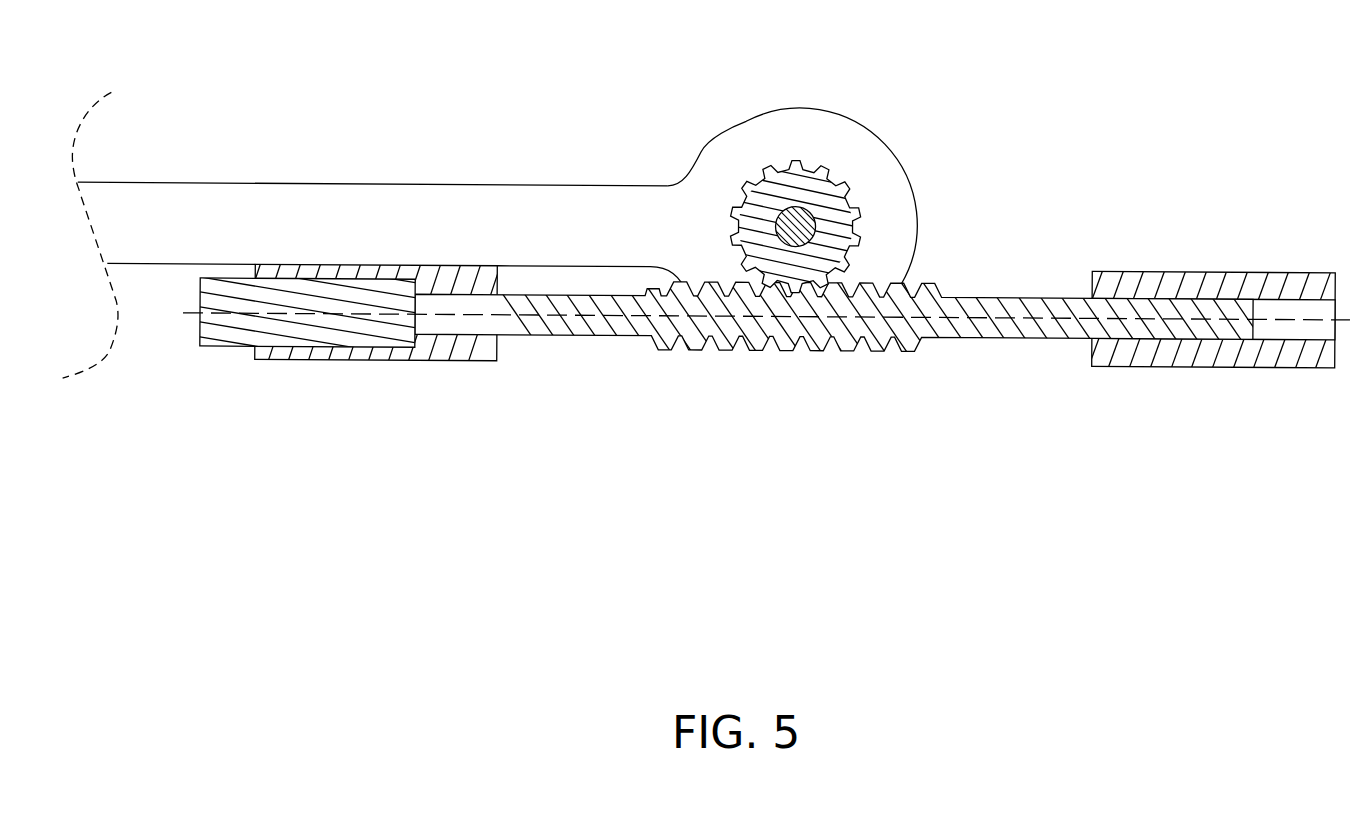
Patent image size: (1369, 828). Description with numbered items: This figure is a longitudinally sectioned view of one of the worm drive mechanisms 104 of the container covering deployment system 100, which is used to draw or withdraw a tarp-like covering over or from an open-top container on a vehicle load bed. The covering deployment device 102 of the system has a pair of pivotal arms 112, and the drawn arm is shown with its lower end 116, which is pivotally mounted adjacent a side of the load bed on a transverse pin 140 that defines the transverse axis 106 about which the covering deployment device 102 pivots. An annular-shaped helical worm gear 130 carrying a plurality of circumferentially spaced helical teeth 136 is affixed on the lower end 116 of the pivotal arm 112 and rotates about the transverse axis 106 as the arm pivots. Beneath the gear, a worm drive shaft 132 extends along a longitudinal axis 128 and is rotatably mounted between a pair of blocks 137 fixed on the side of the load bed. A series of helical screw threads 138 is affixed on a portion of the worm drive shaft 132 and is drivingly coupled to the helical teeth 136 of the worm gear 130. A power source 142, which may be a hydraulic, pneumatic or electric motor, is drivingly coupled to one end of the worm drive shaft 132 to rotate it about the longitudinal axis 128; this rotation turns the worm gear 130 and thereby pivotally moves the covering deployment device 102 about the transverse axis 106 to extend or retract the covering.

The container covering deployment system 100 is at (696, 32).
The covering deployment device 102 is at (220, 170).
The worm drive mechanism 104 is at (1000, 106).
The transverse axis 106 is at (787, 227).
The pivotal arm 112 is at (446, 182).
The lower end 116 is at (790, 107).
The longitudinal axis 128 is at (1060, 336).
The annular-shaped helical worm gear 130 is at (728, 232).
The worm drive shaft 132 is at (1020, 296).
The helical teeth 136 is at (803, 162).
The block 137 is at (1200, 364).
The helical screw threads 138 is at (912, 347).
The transverse pin 140 is at (840, 190).
The power source 142 is at (277, 340).